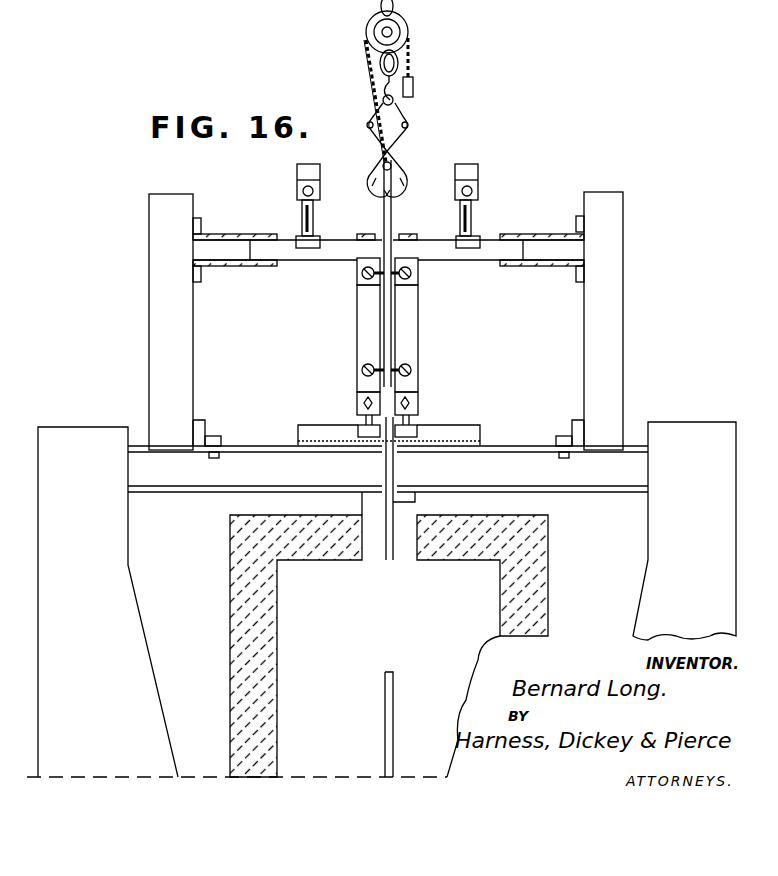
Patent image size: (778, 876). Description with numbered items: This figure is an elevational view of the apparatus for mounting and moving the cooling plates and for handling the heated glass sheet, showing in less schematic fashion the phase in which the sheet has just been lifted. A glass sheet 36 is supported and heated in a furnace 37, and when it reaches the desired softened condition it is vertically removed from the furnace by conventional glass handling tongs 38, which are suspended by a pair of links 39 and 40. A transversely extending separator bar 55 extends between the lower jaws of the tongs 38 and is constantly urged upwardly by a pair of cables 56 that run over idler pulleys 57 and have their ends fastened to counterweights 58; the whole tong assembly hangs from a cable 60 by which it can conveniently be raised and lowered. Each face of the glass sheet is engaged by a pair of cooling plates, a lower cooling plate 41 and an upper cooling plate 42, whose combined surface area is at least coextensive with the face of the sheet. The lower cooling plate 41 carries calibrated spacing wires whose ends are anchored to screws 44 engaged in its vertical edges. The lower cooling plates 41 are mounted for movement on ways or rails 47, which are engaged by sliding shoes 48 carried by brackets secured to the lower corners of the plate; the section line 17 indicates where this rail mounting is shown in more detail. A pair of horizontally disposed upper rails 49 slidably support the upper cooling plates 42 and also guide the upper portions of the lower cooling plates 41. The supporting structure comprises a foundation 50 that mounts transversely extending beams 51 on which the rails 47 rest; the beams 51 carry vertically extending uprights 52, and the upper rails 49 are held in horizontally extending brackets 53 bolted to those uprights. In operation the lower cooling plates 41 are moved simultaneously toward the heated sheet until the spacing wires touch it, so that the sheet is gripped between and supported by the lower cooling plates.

The cable 60 is at (370, 4).
The idler pulleys 57 is at (397, 27).
The cables 56 is at (371, 43).
The link 40 is at (383, 62).
The link 39 is at (382, 86).
The counterweights 58 is at (414, 82).
The section line 17- 17 is at (437, 200).
The glass handling tongs 38 is at (372, 140).
The separator bar 55 is at (390, 165).
The uprights 52 is at (151, 293).
The upper rails 49 is at (288, 253).
The brackets 53 is at (222, 268).
The upper cooling plates 42 is at (300, 170).
The glass sheet 36 is at (386, 322).
The lower cooling plates 41 is at (358, 350).
The screws 44 is at (412, 272).
The sliding shoes 48 is at (360, 428).
The rails 47 is at (302, 432).
The beams 51 is at (170, 480).
The foundation 50 is at (122, 577).
The furnace 37 is at (483, 607).